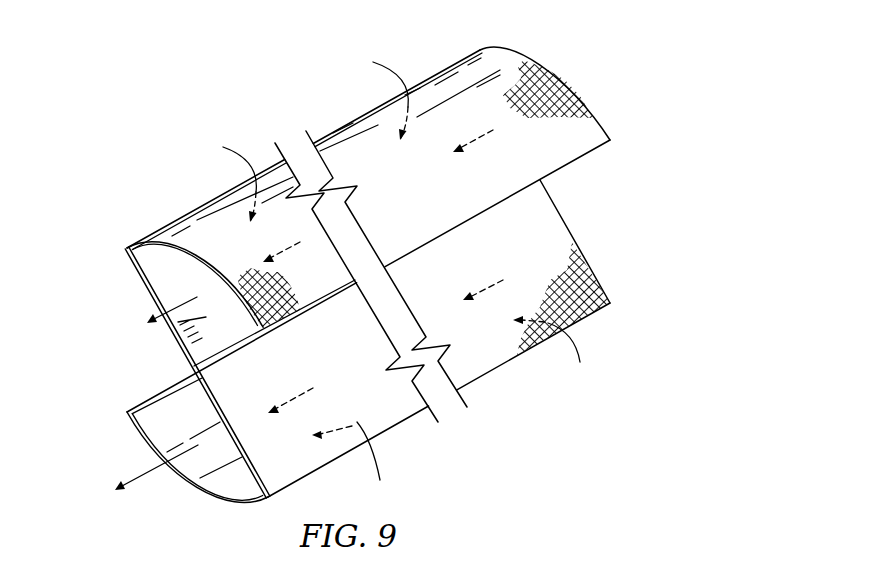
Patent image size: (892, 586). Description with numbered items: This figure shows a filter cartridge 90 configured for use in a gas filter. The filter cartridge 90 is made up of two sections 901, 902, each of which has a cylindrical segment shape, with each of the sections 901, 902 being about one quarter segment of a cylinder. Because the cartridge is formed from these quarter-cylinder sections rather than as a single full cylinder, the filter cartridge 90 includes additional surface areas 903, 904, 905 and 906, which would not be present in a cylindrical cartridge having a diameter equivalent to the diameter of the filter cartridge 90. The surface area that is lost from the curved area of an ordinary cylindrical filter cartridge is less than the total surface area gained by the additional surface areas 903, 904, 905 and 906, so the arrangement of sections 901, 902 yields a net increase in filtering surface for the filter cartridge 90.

The filter cartridge 90 is at (586, 52).
The section 901 is at (180, 367).
The section 902 is at (560, 175).
The additional surface area 903 is at (380, 434).
The additional surface area 904 is at (240, 350).
The additional surface area 905 is at (153, 398).
The additional surface area 906 is at (183, 283).